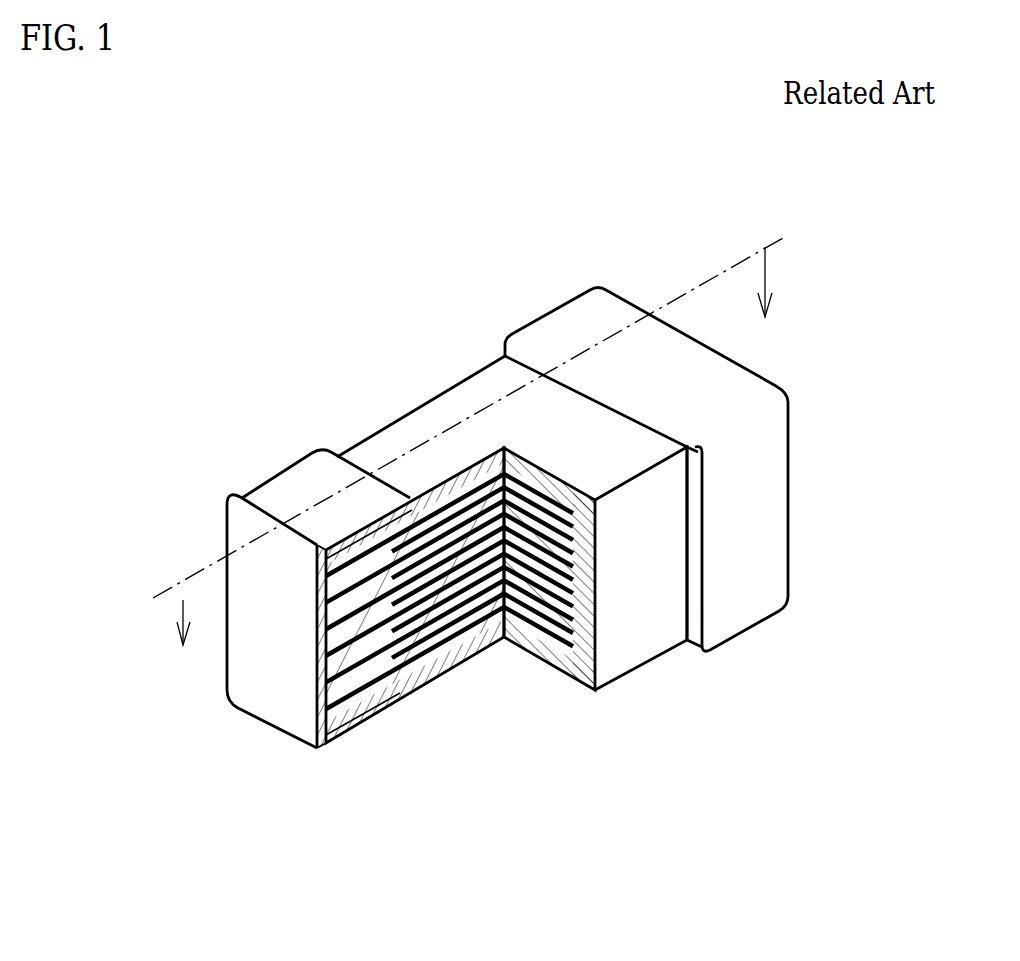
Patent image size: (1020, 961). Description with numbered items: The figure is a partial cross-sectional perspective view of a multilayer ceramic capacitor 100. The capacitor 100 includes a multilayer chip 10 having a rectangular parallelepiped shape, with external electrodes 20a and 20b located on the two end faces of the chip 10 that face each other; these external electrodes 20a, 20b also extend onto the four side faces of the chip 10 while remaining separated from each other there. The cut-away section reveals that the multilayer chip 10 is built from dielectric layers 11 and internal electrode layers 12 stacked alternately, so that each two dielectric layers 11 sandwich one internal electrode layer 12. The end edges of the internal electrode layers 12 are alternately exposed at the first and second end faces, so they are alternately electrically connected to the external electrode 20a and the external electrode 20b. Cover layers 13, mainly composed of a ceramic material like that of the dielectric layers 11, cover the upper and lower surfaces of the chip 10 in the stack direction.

The multilayer ceramic capacitor 100 is at (883, 224).
The multilayer chip 10 is at (373, 432).
The dielectric layer 11 is at (433, 648).
The internal electrode layer 12 is at (464, 627).
The cover layer 13 is at (477, 393).
The external electrode 20a is at (283, 460).
The external electrode 20b is at (558, 325).